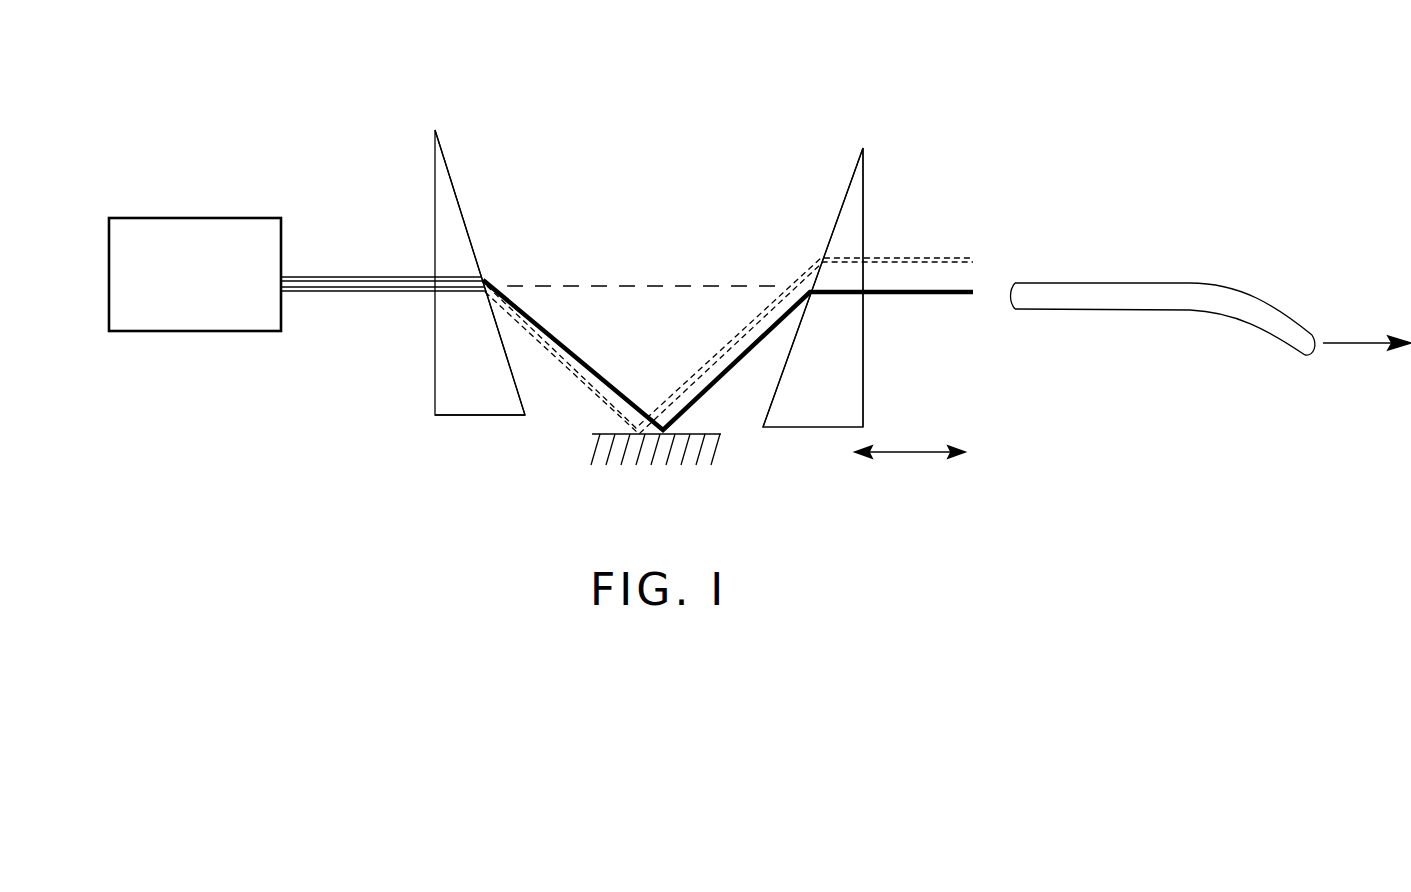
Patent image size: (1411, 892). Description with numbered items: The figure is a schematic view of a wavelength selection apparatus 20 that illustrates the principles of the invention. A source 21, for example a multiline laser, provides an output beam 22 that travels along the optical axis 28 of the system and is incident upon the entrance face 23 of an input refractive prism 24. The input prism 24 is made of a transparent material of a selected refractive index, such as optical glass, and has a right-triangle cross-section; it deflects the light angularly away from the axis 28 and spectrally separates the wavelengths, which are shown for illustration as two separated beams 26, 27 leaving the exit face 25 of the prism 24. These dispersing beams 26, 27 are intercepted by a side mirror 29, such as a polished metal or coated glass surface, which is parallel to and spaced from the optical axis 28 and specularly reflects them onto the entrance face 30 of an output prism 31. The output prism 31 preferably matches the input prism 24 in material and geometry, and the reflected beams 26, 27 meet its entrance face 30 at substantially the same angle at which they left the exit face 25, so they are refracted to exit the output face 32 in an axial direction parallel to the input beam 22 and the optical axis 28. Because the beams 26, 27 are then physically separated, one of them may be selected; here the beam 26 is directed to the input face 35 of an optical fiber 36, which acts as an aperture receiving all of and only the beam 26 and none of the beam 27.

The wavelength selection apparatus 20 is at (738, 132).
The source 21 is at (190, 218).
The output beam 22 is at (344, 293).
The entrance face 23 is at (433, 213).
The input refractive prism 24 is at (434, 393).
The exit face 25 is at (467, 223).
The separated beam 26 is at (576, 357).
The separated beam 27 is at (590, 394).
The optical axis 28 is at (629, 286).
The side mirror 29 is at (720, 436).
The entrance face 30 is at (845, 198).
The output prism 31 is at (863, 410).
The output face 32 is at (866, 208).
The input face 35 is at (1012, 304).
The optical fiber 36 is at (1224, 286).